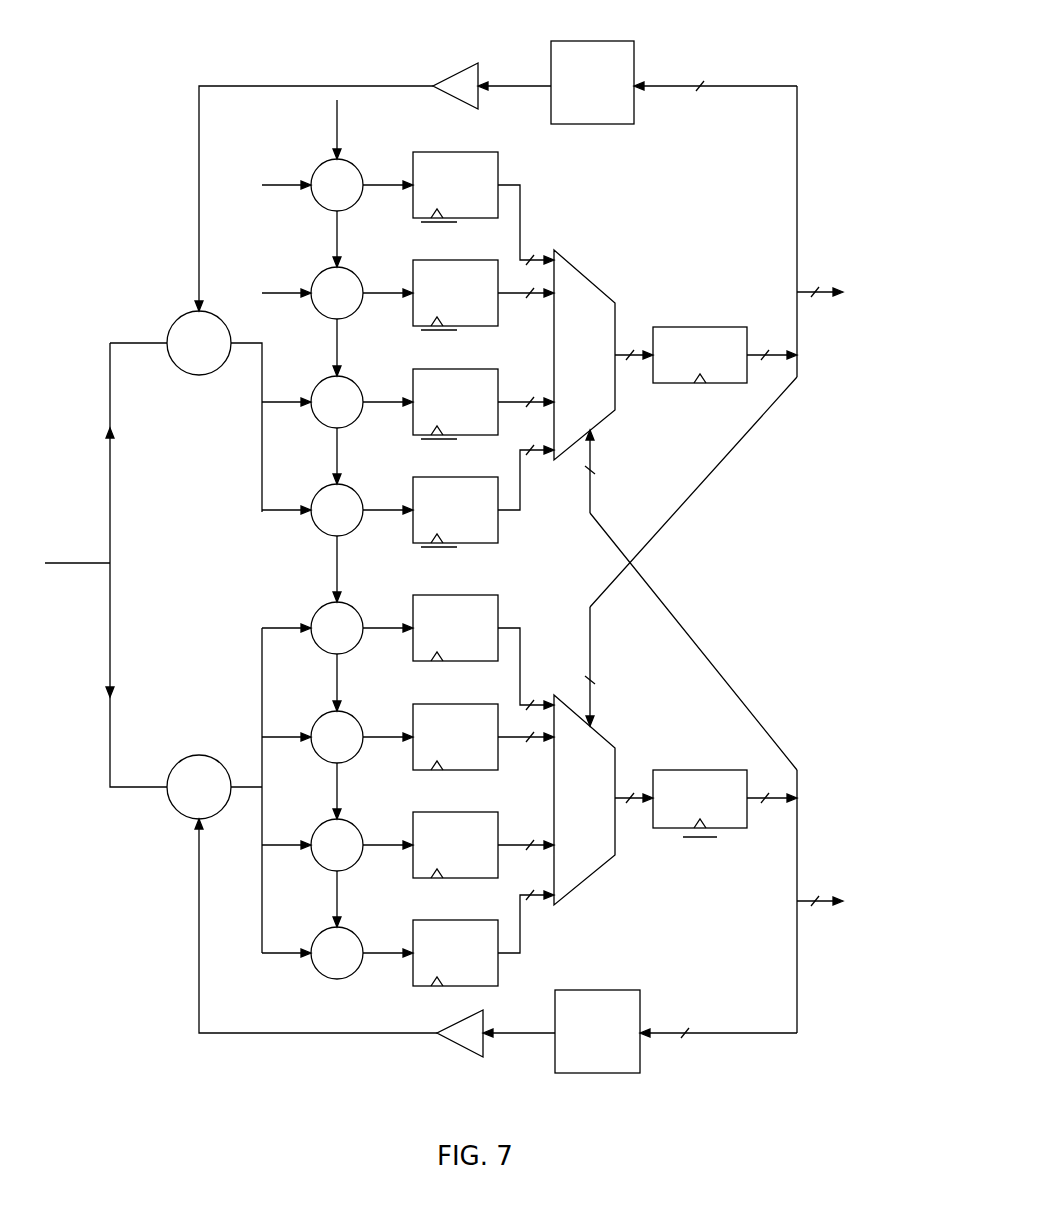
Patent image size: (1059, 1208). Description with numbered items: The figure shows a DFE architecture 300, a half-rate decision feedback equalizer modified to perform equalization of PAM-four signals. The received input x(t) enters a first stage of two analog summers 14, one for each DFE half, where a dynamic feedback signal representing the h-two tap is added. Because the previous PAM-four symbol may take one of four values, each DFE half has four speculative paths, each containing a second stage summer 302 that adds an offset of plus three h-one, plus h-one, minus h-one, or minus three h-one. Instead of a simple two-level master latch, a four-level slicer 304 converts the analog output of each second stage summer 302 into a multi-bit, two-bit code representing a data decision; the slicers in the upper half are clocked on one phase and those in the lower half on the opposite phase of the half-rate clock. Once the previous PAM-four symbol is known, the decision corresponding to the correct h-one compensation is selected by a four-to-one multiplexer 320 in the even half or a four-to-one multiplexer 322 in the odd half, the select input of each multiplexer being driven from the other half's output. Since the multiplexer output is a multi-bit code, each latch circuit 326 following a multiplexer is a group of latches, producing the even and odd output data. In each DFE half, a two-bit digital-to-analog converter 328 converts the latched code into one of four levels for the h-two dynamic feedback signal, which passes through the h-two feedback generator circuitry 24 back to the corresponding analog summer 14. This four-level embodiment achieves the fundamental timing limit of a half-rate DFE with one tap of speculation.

The DFE architecture 300 is at (337, 33).
The analog summer 14 is at (195, 375).
The h2 feedback generator circuitry 24 is at (456, 77).
The second stage summer 302 is at (356, 203).
The 4-level slicer 304 is at (445, 152).
The 4:1 MUX 320 is at (580, 272).
The 4:1 MUX 322 is at (598, 733).
The latch circuit 326 is at (687, 327).
The 2-bit digital-to-analog converter 328 is at (583, 41).